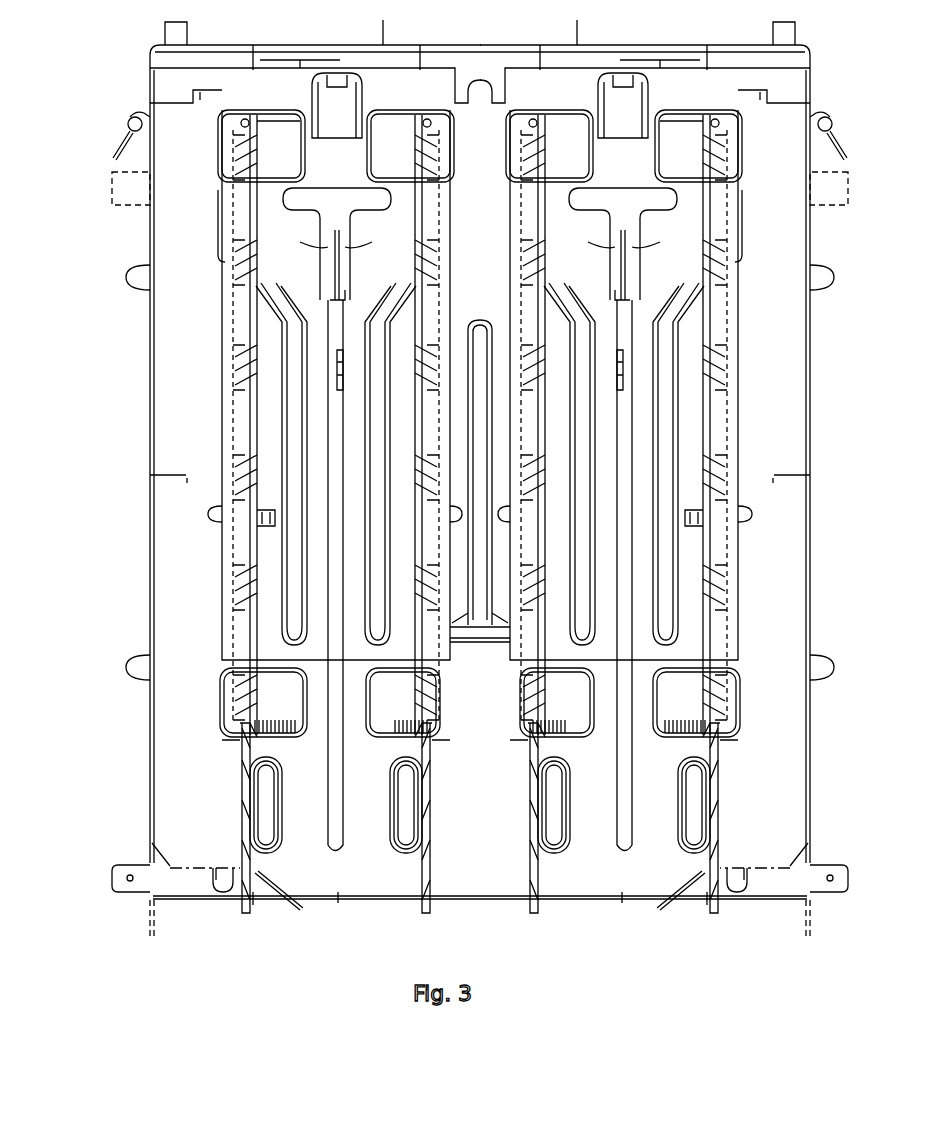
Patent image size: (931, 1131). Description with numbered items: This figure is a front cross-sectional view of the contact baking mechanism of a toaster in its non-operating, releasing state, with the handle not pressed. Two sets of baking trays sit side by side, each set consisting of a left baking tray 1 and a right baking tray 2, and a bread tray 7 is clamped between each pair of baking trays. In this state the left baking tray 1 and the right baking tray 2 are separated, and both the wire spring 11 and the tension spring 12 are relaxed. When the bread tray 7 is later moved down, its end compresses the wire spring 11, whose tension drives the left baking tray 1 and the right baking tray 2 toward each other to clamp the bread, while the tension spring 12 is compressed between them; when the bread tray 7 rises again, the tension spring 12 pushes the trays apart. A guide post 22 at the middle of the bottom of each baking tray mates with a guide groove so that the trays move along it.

The left baking tray 1 is at (252, 375).
The right baking tray 2 is at (420, 612).
The bread tray 7 is at (335, 280).
The wire spring 11 is at (297, 123).
The tension spring 12 is at (247, 723).
The guide post 22 is at (250, 848).